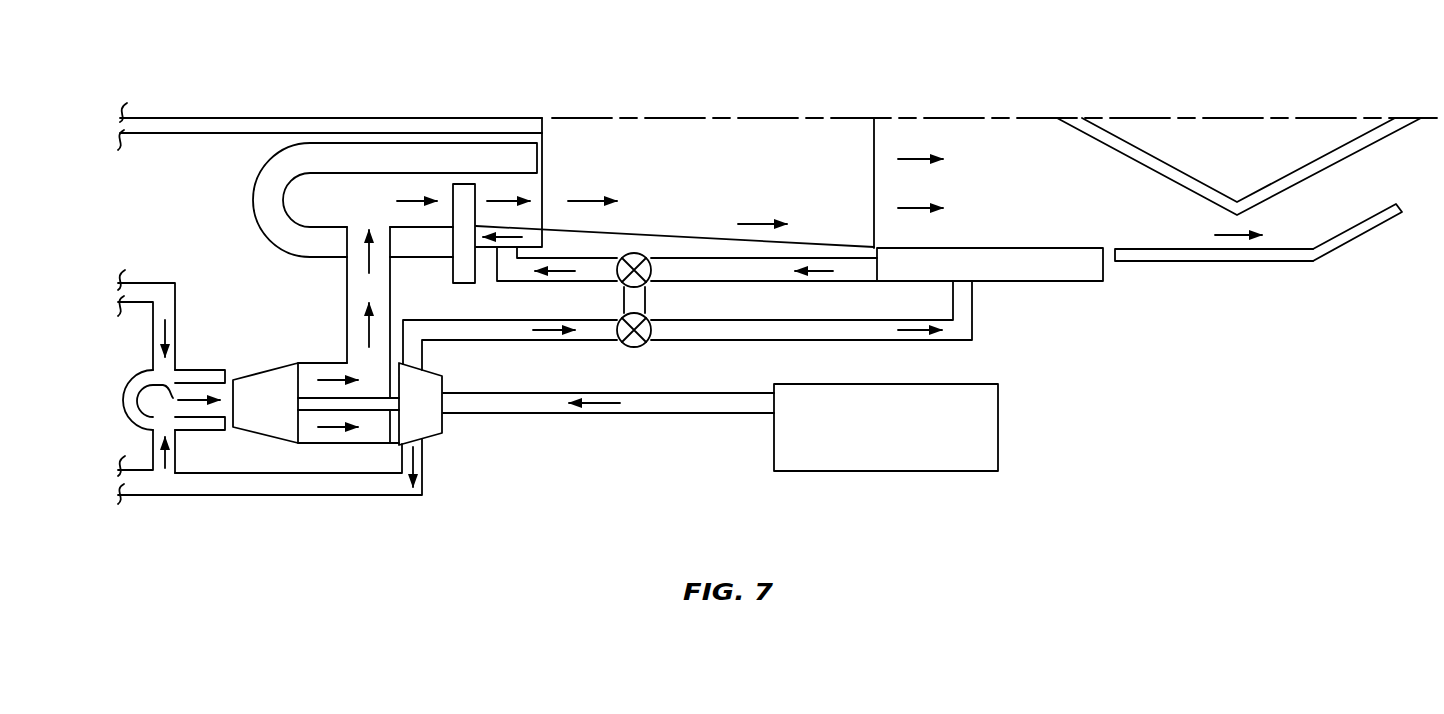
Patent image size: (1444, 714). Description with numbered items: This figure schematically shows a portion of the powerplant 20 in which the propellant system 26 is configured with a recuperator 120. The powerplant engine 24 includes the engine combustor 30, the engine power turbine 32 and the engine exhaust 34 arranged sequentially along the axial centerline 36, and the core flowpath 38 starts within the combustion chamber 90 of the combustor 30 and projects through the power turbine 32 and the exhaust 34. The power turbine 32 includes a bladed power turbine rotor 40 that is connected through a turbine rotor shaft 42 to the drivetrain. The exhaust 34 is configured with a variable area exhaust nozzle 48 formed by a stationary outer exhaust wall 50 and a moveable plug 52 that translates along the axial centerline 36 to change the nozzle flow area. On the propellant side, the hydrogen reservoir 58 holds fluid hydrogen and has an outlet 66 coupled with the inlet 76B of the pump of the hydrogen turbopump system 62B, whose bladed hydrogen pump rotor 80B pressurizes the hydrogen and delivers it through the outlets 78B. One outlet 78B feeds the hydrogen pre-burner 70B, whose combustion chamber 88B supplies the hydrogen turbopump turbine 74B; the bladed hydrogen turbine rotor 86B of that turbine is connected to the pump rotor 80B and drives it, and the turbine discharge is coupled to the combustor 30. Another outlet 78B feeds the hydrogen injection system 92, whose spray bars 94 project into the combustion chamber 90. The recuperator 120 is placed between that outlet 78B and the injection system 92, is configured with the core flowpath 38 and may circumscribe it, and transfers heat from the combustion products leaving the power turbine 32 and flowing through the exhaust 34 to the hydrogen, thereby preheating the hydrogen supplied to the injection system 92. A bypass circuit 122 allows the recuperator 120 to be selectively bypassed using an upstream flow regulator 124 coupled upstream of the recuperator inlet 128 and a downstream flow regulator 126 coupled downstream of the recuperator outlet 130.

The powerplant 20 is at (1116, 482).
The powerplant engine 24 is at (1026, 102).
The powerplant propellant system 26 is at (468, 523).
The engine combustor 30 is at (244, 210).
The engine power turbine 32 is at (680, 112).
The engine exhaust 34 is at (1221, 270).
The axial centerline 36 is at (1422, 116).
The core flowpath 38 is at (1023, 193).
The bladed power turbine rotor 40 is at (783, 117).
The turbine rotor shaft 42 is at (193, 135).
The variable area exhaust nozzle 48 is at (1350, 254).
The exhaust wall 50 is at (1275, 262).
The moveable plug 52 is at (1355, 155).
The hydrogen reservoir 58 is at (814, 478).
The hydrogen turbopump system 62B is at (446, 446).
The outlet 66 is at (768, 420).
The hydrogen pre-burner 70B is at (118, 416).
The hydrogen turbopump turbine 74B is at (275, 361).
The inlet 76B is at (447, 424).
The outlets 78B is at (424, 364).
The bladed hydrogen pump rotor 80B is at (428, 442).
The bladed hydrogen turbine rotor 86B is at (255, 370).
The combustion chamber 88B is at (151, 371).
The combustion chamber 90 is at (361, 215).
The hydrogen injection system 92 is at (446, 269).
The spray bars 94 is at (453, 194).
The recuperator 120 is at (1078, 288).
The bypass circuit 122 is at (654, 299).
The upstream flow regulator 124 is at (639, 348).
The downstream flow regulator 126 is at (636, 252).
The inlet 128 is at (978, 283).
The outlet 130 is at (878, 283).